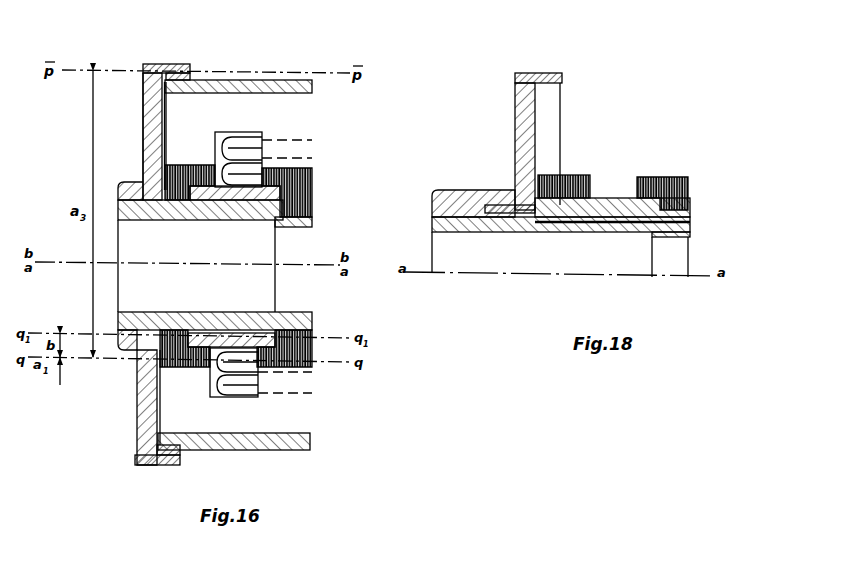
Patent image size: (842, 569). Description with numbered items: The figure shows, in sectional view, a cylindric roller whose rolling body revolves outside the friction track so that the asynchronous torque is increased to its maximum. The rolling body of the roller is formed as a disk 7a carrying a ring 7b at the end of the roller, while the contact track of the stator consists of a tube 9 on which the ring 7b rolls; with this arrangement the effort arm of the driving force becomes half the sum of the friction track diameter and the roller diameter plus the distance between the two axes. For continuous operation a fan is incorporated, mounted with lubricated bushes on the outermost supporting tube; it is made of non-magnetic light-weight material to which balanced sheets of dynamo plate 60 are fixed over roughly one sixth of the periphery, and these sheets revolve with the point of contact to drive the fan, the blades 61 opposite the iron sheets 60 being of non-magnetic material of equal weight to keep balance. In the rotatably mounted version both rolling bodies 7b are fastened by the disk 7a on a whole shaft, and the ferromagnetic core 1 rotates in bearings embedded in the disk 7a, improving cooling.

In FIG. 16, the ferromagnetic core 1 is at (287, 212).
In FIG. 18, the ferromagnetic core 1 is at (683, 208).
In FIG. 16, the disk 7a is at (150, 127).
In FIG. 18, the disk 7a is at (525, 137).
In FIG. 16, the ring 7b is at (162, 63).
In FIG. 18, the ring 7b is at (533, 73).
In FIG. 16, the tube 9 is at (190, 73).
In FIG. 16, the sheet of dynamo plate 60 is at (247, 174).
In FIG. 16, the fan blades of non-magnetic material 61 is at (244, 367).